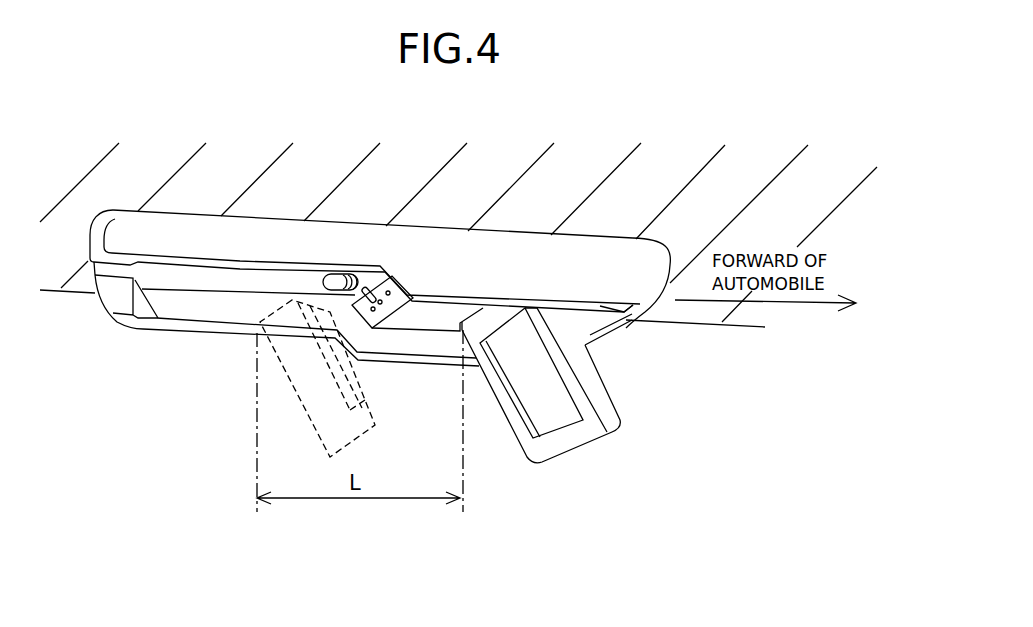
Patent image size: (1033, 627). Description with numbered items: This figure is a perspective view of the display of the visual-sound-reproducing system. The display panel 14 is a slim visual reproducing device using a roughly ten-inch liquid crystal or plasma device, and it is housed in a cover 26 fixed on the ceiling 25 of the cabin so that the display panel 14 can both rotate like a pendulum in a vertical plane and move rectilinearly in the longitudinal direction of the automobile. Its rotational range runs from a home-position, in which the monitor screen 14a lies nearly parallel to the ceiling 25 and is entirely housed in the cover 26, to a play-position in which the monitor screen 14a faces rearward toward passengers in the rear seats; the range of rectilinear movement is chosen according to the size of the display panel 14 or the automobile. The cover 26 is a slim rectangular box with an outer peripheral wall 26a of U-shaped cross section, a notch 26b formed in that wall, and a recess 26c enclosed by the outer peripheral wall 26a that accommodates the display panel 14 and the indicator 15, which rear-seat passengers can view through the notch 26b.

The display panel 14 is at (492, 424).
The monitor screen 14a is at (560, 418).
The indicator 15 is at (433, 310).
The ceiling 25 is at (740, 314).
The cover 26 is at (640, 263).
The outer peripheral wall 26a is at (630, 314).
The notch 26b is at (94, 270).
The recess 26c is at (210, 273).